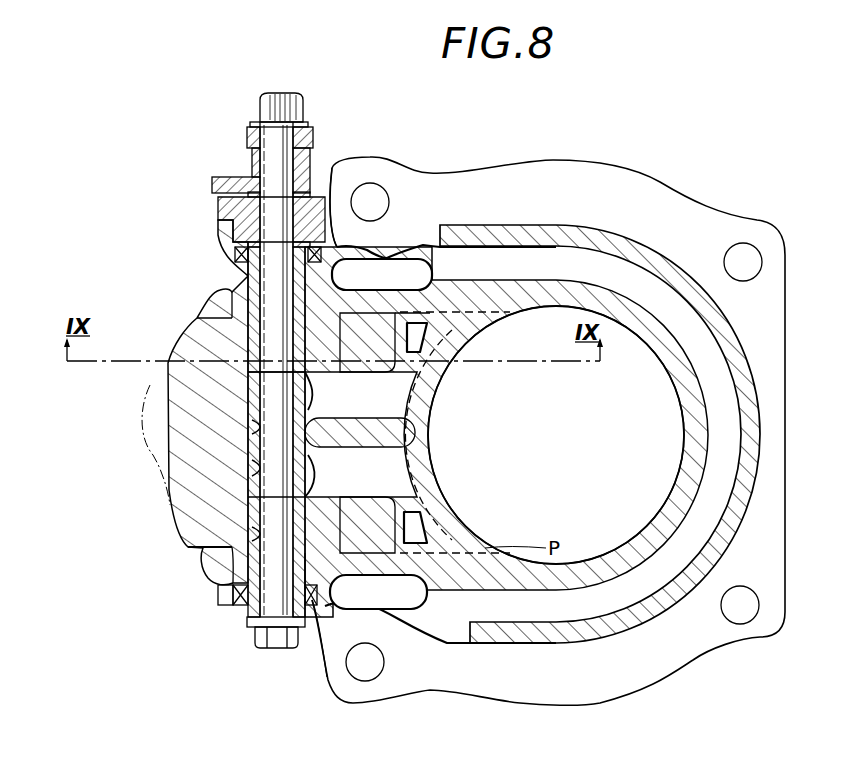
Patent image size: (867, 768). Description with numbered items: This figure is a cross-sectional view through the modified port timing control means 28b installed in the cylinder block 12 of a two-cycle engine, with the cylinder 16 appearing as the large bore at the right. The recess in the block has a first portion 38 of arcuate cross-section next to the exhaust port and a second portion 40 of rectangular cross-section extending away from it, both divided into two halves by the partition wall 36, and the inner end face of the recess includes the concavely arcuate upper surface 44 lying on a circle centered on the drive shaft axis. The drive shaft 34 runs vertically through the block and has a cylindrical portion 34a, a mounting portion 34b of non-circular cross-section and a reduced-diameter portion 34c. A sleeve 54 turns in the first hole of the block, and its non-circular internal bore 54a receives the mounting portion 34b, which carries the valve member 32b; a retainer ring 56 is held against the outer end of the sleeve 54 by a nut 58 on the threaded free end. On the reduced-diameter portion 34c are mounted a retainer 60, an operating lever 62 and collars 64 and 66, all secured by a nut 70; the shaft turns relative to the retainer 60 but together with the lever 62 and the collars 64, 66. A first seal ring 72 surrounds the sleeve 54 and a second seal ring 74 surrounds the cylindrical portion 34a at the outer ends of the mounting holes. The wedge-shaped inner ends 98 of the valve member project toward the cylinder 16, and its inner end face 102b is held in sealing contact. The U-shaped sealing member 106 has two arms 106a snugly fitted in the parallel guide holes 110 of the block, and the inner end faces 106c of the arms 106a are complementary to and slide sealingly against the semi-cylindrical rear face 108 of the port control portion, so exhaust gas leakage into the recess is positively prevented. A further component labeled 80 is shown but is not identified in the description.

The cylinder block 12 is at (672, 607).
The cylinder 16 is at (718, 510).
The port timing control means 28b is at (230, 440).
The valve member 32b is at (372, 600).
The drive shaft 34 is at (272, 606).
The cylindrical portion 34a is at (262, 290).
The mounting portion 34b is at (260, 378).
The reduced-diameter portion 34c is at (305, 140).
The partition wall 36 is at (350, 440).
The first portion of the recess 38 is at (443, 313).
The second portion of the recess 40 is at (340, 378).
The upper surface 44 is at (445, 382).
The sleeve 54 is at (320, 603).
The internal bore 54a is at (225, 560).
The retainer ring 56 is at (248, 622).
The nut 58 is at (258, 638).
The retainer 60 is at (219, 207).
The operating lever 62 is at (213, 183).
The collar 64 is at (253, 165).
The collar 66 is at (258, 135).
The nut 70 is at (303, 110).
The first seal ring 72 is at (232, 593).
The second seal ring 74 is at (237, 252).
The O-ring 80 is at (257, 410).
The inner ends 98 is at (445, 432).
The inner end face 102b is at (440, 413).
The sealing member 106 is at (318, 590).
The arms 106a is at (377, 345).
The inner end faces 106c is at (410, 330).
The rear face 108 is at (350, 335).
The guide holes 110 is at (328, 240).